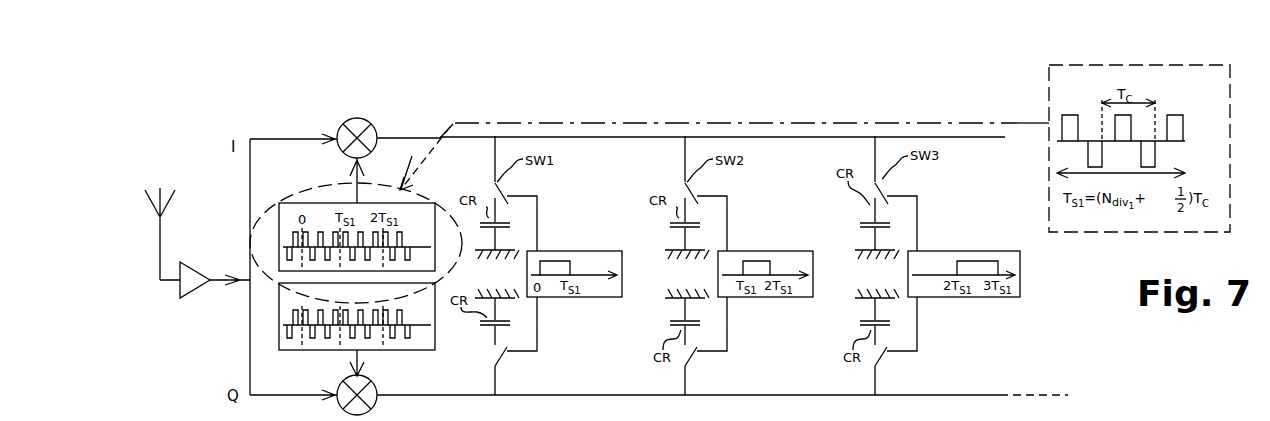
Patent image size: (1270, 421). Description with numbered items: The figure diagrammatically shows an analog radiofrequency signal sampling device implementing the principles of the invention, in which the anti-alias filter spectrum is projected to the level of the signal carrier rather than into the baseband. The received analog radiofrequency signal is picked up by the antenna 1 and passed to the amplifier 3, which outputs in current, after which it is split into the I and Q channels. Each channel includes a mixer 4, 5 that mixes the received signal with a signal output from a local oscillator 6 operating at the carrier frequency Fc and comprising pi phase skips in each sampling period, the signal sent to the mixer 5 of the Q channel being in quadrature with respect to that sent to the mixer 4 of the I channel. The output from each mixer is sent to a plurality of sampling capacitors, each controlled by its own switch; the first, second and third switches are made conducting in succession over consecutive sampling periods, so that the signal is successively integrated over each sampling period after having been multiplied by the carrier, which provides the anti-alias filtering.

The antenna 1 is at (160, 250).
The amplifier 3 is at (194, 291).
The mixer 4 is at (362, 120).
The mixer 5 is at (378, 399).
The local oscillator 6 is at (445, 320).